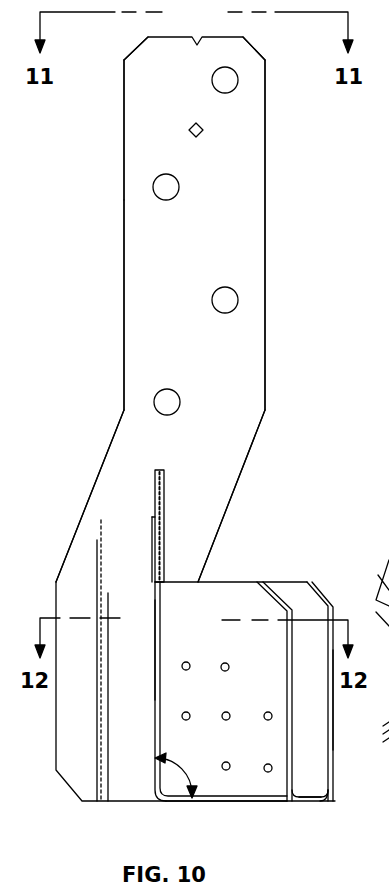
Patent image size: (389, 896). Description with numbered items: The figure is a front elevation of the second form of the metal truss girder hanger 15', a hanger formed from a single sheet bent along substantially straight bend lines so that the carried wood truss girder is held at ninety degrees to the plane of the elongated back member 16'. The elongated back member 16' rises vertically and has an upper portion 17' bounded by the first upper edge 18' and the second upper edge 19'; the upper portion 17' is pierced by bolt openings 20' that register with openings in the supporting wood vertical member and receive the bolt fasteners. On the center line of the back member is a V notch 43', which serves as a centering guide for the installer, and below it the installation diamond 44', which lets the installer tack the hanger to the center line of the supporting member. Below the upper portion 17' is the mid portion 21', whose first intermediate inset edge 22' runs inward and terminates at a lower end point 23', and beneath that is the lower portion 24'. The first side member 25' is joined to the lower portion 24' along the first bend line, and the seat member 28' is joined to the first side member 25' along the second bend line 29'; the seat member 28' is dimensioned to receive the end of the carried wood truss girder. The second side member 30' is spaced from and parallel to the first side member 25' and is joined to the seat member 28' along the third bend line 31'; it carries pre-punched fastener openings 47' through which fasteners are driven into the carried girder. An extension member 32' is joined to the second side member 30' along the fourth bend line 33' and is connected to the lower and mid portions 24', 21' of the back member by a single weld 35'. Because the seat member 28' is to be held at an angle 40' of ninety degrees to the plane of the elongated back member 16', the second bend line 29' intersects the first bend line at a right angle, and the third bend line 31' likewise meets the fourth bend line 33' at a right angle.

The V notch 43' is at (160, 291).
The elongated back member 16' is at (100, 41).
The metal truss girder hanger 15' is at (291, 41).
The upper portion 17' is at (111, 130).
The second upper edge 19' is at (150, 300).
The first upper edge 18' is at (251, 235).
The bolt openings 20' is at (195, 241).
The installation diamond 44' is at (217, 155).
The mid portion 21' is at (93, 496).
The first intermediate inset edge 22' is at (259, 496).
The lower end point 23' is at (231, 559).
The weld 35' is at (187, 526).
The extension member 32' is at (128, 503).
The second side member 30' is at (245, 691).
The fourth bend line 33' is at (137, 651).
The pre-punched fastener openings 47' is at (227, 717).
The angle 40' is at (186, 766).
The lower portion 24' is at (93, 660).
The first side member 25' is at (353, 706).
The second bend line 29' is at (347, 788).
The third bend line 31' is at (226, 819).
The seat member 28' is at (327, 828).